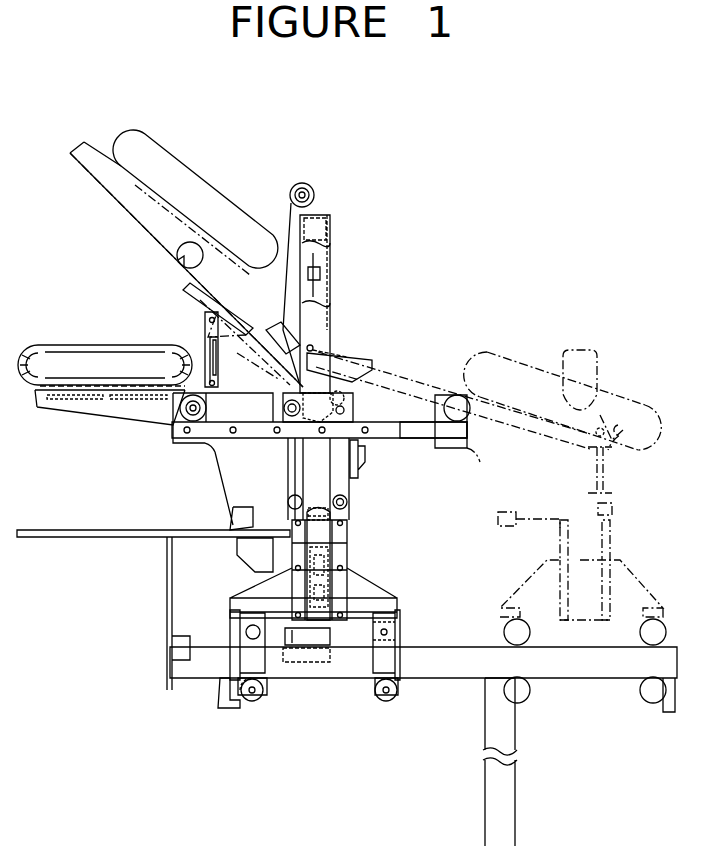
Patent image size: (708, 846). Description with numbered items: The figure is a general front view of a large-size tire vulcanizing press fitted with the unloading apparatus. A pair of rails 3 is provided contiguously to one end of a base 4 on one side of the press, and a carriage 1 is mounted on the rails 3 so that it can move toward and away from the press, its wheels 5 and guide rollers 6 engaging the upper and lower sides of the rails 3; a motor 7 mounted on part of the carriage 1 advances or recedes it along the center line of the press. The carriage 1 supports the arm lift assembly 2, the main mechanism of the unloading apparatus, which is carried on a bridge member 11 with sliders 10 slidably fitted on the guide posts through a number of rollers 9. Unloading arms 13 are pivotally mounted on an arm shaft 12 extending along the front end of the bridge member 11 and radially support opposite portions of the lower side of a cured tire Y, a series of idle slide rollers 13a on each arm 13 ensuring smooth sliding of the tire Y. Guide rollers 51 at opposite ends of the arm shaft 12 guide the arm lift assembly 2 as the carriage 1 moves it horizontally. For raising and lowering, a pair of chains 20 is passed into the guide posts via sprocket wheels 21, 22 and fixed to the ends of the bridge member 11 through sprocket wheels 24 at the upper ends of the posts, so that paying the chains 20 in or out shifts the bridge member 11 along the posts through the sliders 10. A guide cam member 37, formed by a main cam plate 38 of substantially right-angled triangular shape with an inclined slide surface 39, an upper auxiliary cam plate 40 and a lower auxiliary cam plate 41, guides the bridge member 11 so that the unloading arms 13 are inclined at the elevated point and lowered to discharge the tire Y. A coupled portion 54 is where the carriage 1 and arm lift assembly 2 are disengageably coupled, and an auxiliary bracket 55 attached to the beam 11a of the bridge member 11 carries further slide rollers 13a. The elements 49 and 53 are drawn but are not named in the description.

The carriage 1 is at (465, 556).
The arm lift assembly 2 is at (192, 463).
The rails 3 is at (575, 680).
The base 4 is at (92, 530).
The wheels 5 is at (232, 624).
The guide rollers 6 is at (258, 700).
The motor 7 is at (333, 320).
The rollers 9 is at (350, 409).
The sliders 10 is at (356, 478).
The bridge member 11 is at (232, 474).
The beam 11a is at (615, 478).
The arm shaft 12 is at (182, 267).
The unloading arms 13 is at (148, 250).
The idle slide rollers 13a is at (78, 382).
The chains 20 is at (322, 290).
The sprocket wheel 21 is at (338, 550).
The sprocket wheel 22 is at (340, 580).
The sprocket wheels 24 is at (310, 188).
The guide cam member 37 is at (200, 352).
The main cam plate 38 is at (223, 407).
The inclined slide surface 39 is at (248, 336).
The upper auxiliary cam plate 40 is at (184, 298).
The lower auxiliary cam plate 41 is at (362, 358).
The guide bar 49 is at (208, 345).
The guide rollers 51 is at (190, 420).
The bar extension 53 is at (412, 440).
The coupled portion 54 is at (310, 512).
The auxiliary bracket 55 is at (622, 455).
The cured tire Y is at (540, 360).